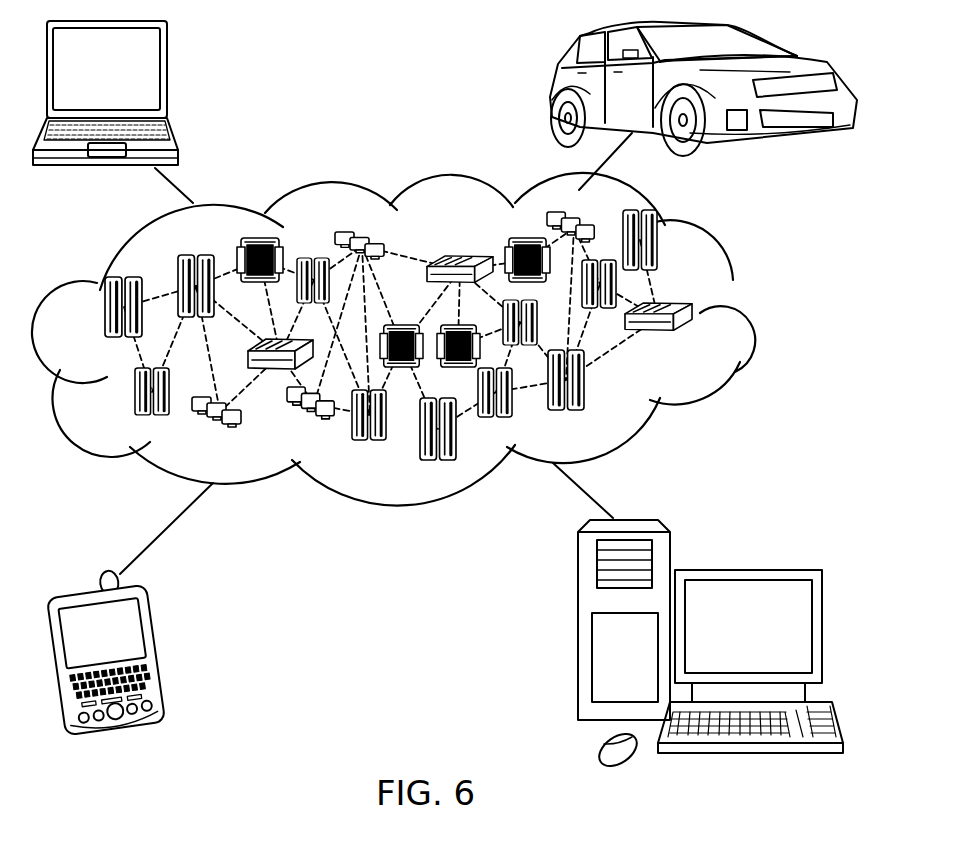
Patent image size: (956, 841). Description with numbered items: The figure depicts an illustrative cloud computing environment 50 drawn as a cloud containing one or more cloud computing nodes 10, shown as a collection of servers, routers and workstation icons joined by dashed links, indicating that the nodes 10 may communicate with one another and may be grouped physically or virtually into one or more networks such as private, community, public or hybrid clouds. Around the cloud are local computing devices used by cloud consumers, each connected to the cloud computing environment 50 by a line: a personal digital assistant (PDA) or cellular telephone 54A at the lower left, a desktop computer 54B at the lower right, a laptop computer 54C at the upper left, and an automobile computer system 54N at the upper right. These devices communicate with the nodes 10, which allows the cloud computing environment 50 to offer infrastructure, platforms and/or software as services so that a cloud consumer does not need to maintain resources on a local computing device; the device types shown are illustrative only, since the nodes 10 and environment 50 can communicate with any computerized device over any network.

The cloud computing nodes 10 is at (708, 346).
The cloud computing environment 50 is at (745, 312).
The personal digital assistant (PDA) or cellular telephone 54A is at (160, 650).
The desktop computer 54B is at (745, 570).
The laptop computer 54C is at (167, 76).
The automobile computer system 54N is at (552, 90).